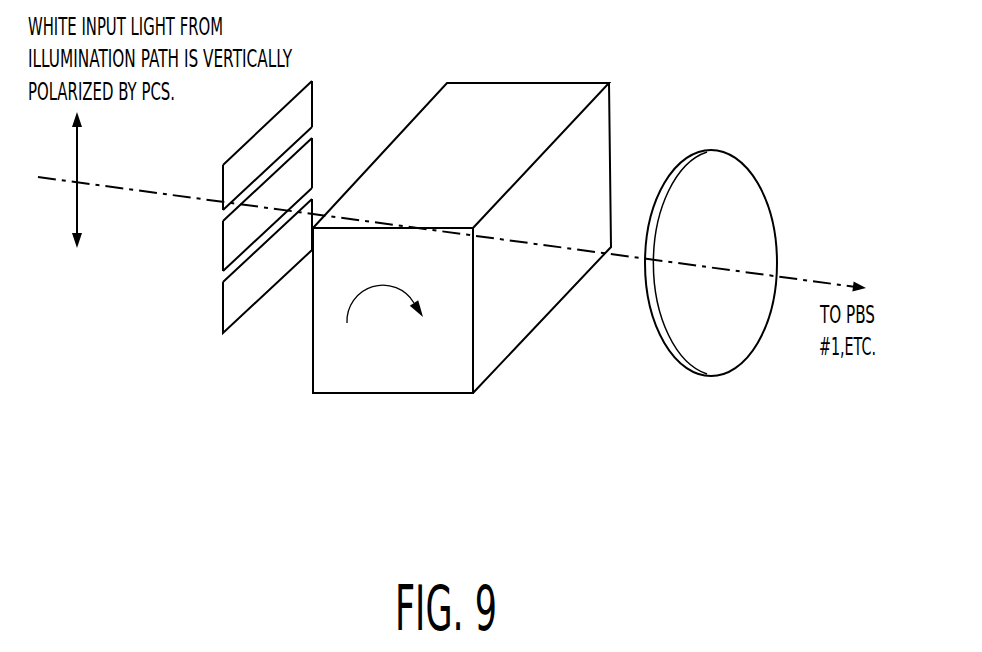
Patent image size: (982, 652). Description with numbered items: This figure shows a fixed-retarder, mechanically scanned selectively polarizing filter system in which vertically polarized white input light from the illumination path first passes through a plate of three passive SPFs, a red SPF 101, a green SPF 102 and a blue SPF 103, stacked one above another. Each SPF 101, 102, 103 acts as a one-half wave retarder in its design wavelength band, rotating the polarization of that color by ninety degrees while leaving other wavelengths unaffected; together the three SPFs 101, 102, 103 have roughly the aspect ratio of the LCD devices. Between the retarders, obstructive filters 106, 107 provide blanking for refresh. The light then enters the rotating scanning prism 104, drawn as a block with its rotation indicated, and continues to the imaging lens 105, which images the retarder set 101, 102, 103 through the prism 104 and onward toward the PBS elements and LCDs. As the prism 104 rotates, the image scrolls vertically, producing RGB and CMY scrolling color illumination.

The passive SPF (red) 101 is at (222, 188).
The passive SPF (green) 102 is at (222, 240).
The passive SPF (blue) 103 is at (222, 306).
The scanning prism 104 is at (383, 393).
The imaging lens 105 is at (692, 376).
The obstructive filter 106 is at (313, 133).
The obstructive filter 107 is at (313, 195).